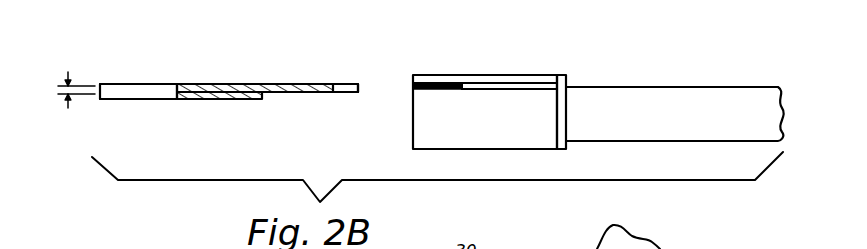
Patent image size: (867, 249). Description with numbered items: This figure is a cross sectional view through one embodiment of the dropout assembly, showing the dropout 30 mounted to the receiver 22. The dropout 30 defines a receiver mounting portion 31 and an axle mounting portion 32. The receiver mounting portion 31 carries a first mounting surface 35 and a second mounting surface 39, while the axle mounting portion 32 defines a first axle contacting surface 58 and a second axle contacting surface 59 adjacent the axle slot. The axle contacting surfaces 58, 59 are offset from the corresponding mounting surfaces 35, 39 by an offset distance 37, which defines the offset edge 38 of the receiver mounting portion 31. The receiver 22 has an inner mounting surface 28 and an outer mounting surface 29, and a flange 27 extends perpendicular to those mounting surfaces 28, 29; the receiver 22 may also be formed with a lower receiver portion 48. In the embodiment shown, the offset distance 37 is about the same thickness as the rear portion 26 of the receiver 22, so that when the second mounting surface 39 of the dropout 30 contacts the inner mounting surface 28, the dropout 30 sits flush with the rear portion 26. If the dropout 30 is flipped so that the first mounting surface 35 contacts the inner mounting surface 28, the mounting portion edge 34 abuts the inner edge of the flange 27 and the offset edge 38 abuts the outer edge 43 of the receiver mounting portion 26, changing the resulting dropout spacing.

The receiver 22 is at (486, 91).
The rear portion 26 is at (500, 80).
The flange 27 is at (565, 142).
The inner mounting surface 28 is at (448, 82).
The outer mounting surface 29 is at (488, 90).
The dropout 30 is at (232, 127).
The receiver mounting portion 31 is at (292, 85).
The axle mounting portion 32 is at (148, 88).
The mounting portion edge 34 is at (358, 88).
The first mounting surface 35 is at (313, 85).
The offset distance 37 is at (68, 108).
The offset edge 38 is at (265, 100).
The second mounting surface 39 is at (337, 92).
The outer edge 43 is at (555, 74).
The lower receiver portion 48 is at (520, 90).
The first axle contacting surface 58 is at (122, 84).
The second axle contacting surface 59 is at (130, 99).